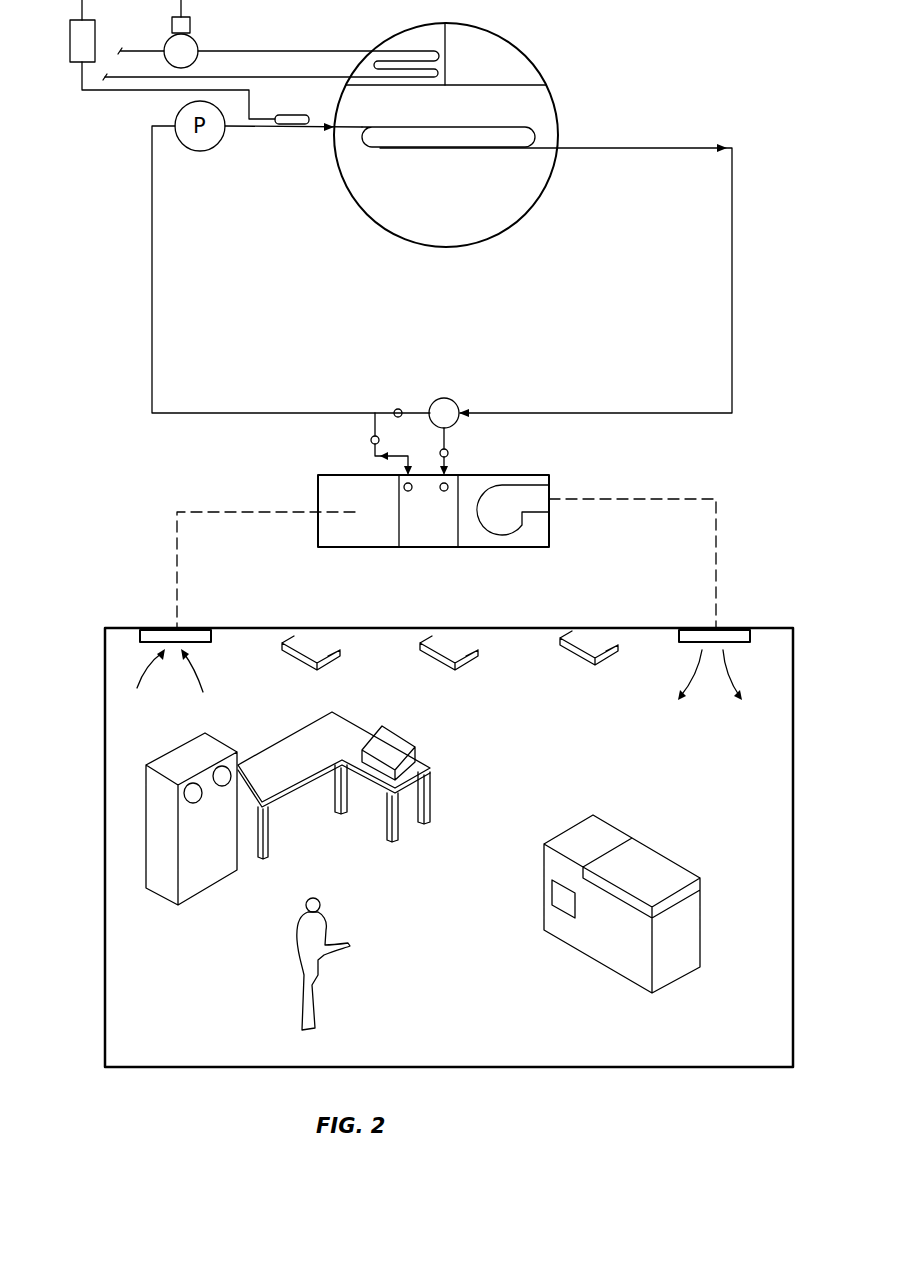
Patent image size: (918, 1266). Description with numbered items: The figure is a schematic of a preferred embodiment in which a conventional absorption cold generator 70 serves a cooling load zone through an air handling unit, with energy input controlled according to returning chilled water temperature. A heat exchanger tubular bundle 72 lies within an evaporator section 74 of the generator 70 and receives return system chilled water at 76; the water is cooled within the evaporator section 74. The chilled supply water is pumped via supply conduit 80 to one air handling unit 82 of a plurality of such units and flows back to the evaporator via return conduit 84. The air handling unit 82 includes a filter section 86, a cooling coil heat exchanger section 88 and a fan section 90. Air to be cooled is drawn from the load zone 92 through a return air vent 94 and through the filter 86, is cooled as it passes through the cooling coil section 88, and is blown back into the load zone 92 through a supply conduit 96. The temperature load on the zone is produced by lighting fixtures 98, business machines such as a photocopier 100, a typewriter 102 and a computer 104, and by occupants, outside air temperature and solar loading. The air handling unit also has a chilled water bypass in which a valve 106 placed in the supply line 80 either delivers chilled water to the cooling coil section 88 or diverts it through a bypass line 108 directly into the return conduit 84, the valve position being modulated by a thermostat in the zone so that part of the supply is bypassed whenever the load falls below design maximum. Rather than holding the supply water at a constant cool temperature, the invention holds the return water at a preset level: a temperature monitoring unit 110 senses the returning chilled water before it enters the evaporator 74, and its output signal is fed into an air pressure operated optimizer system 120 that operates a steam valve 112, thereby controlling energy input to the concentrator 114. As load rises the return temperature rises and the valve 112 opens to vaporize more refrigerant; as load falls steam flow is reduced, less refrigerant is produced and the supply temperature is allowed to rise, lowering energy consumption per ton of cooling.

The absorption cold generator 70 is at (503, 30).
The heat exchanger tubular bundle 72 is at (384, 148).
The evaporator section 74 is at (453, 113).
The return chilled water inlet 76 is at (333, 129).
The supply conduit 80 is at (733, 243).
The air handling unit 82 is at (436, 513).
The return conduit 84 is at (151, 212).
The filter section 86 is at (333, 549).
The cooling coil heat exchanger section 88 is at (425, 549).
The fan section 90 is at (503, 549).
The load zone 92 is at (100, 958).
The return air vent 94 is at (177, 545).
The supply conduit 96 is at (718, 500).
The lighting fixtures 98 is at (330, 664).
The photocopier 100 is at (574, 950).
The typewriter 102 is at (418, 744).
The computer 104 is at (223, 736).
The valve 106 is at (455, 398).
The bypass line 108 is at (414, 410).
The temperature monitoring unit 110 is at (306, 110).
The steam valve 112 is at (190, 30).
The concentrator 114 is at (435, 48).
The air pressure operated optimizer system 120 is at (95, 36).